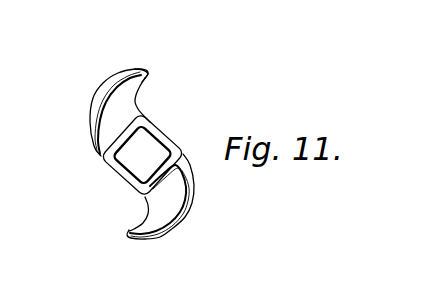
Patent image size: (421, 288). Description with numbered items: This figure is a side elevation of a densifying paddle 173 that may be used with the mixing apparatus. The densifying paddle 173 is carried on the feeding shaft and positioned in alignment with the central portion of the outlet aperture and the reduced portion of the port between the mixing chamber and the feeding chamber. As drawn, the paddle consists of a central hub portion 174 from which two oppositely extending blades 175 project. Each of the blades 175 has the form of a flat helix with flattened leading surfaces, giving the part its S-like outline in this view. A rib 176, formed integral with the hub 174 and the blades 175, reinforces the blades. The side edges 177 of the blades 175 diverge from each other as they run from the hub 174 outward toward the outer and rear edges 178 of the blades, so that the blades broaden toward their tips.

The densifying paddle 173 is at (118, 126).
The hub portion 174 is at (108, 156).
The blades 175 is at (108, 91).
The rib 176 is at (114, 119).
The side edges 177 is at (92, 117).
The outer and rear edges 178 is at (133, 75).